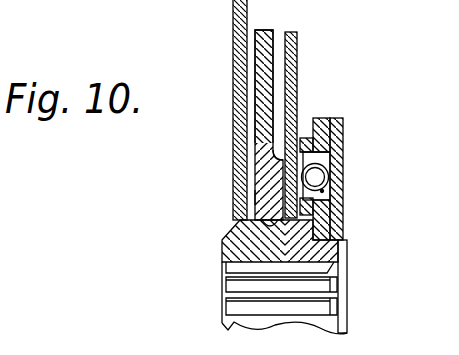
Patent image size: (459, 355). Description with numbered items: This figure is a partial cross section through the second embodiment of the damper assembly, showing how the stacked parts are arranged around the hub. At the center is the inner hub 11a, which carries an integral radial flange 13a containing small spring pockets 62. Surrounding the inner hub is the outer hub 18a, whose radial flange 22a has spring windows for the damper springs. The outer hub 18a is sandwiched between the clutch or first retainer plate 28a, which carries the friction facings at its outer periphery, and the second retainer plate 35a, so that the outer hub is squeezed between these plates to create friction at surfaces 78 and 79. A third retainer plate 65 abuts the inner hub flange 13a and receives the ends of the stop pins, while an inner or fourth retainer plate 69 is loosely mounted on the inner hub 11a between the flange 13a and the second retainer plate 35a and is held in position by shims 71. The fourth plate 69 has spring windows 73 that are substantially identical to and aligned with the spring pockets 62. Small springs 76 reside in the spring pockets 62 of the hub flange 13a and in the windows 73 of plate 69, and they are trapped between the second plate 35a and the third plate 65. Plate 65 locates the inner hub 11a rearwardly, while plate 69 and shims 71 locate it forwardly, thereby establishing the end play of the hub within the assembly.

The radial flange 22a is at (257, 50).
The second retainer plate 35a is at (294, 78).
The integral radial flange 13a is at (331, 118).
The first retainer plate 28a is at (241, 100).
The spring windows 73 is at (280, 144).
The small spring pockets 62 is at (341, 146).
The outer hub 18a is at (240, 178).
The small springs 76 is at (332, 166).
The friction surface 78 is at (255, 197).
The fourth retainer plate 69 is at (342, 192).
The inner hub 11a is at (221, 240).
The third retainer plate 65 is at (345, 216).
The friction surface 79 is at (228, 263).
The shims 71 is at (278, 224).